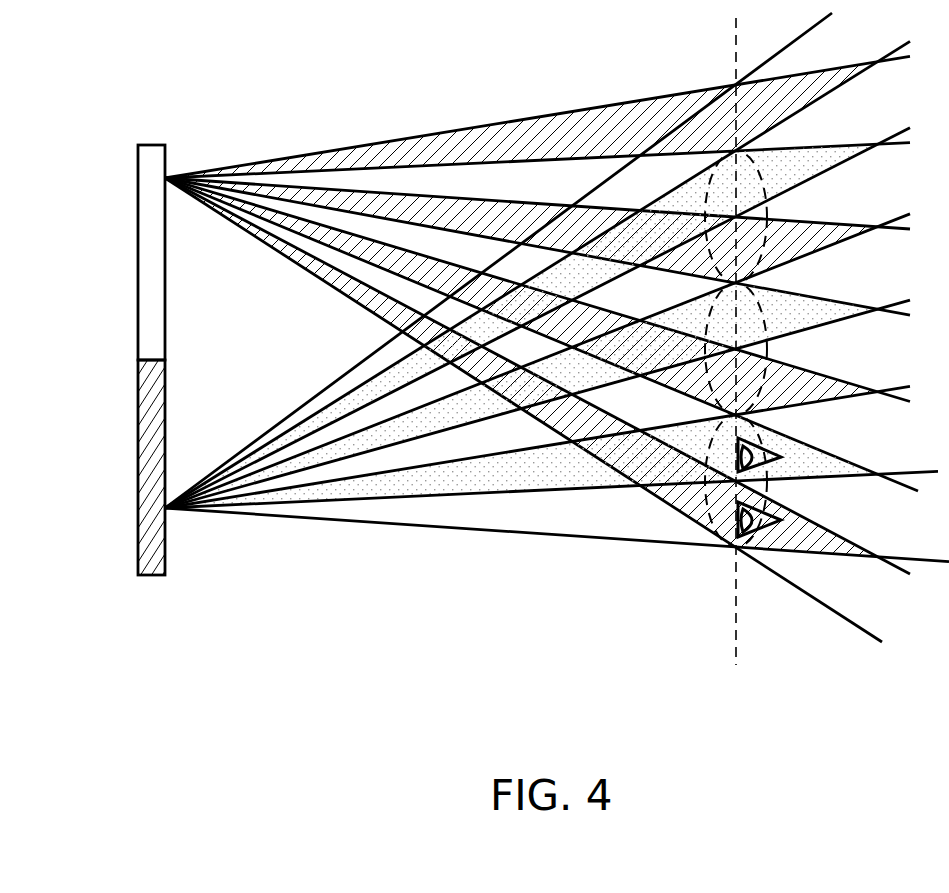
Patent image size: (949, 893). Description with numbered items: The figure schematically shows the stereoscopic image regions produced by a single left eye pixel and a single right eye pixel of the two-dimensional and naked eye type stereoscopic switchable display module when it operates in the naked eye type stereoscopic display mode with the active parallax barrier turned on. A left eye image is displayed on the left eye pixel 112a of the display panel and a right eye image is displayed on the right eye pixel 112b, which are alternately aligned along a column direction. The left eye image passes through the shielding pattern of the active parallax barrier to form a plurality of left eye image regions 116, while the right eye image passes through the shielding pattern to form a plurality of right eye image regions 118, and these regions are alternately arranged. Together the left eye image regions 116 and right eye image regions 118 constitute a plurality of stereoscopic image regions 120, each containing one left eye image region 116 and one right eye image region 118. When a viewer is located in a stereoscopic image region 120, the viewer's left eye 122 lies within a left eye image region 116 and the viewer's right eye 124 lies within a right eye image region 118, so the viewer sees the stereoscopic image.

The left eye pixels 112a is at (157, 240).
The right eye pixels 112b is at (157, 490).
The left eye image regions 116 is at (452, 148).
The right eye image regions 118 is at (503, 487).
The stereoscopic image regions 120 is at (700, 532).
The viewer's left eye 122 is at (764, 518).
The viewer's right eye 124 is at (764, 438).